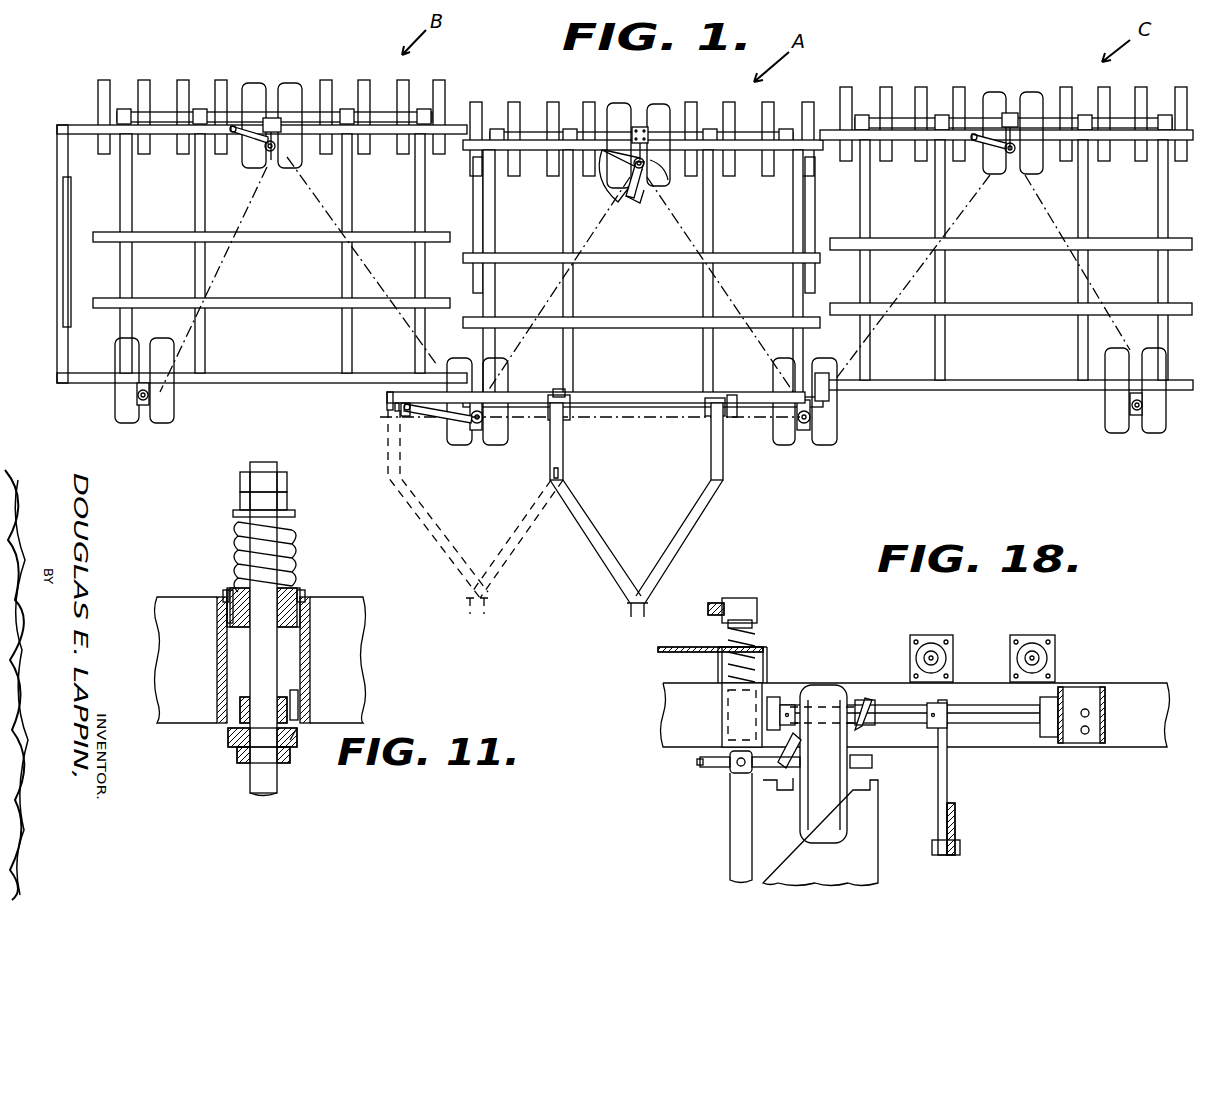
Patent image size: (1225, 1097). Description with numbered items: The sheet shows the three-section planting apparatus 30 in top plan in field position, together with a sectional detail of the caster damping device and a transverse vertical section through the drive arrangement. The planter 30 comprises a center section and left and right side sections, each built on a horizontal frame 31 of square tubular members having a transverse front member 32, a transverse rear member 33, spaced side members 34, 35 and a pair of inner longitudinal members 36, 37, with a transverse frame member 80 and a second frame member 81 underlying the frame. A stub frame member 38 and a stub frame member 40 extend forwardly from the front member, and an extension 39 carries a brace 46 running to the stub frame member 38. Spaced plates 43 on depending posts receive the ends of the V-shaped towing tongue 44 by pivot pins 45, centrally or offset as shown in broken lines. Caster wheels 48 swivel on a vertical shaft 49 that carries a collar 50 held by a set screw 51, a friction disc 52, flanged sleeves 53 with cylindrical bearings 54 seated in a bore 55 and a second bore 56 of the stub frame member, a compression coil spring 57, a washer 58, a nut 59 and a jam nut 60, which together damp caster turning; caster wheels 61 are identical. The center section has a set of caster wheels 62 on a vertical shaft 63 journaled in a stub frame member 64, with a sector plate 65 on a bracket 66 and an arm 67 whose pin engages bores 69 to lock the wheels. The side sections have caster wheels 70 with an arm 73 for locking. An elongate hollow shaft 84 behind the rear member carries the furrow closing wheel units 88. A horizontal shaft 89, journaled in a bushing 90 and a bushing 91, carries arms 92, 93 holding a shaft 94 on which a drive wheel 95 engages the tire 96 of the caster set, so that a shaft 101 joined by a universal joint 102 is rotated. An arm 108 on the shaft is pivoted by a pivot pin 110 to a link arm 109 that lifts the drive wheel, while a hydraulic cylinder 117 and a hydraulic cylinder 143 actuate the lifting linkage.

In FIG. 1, the three-section planting apparatus 30 is at (796, 480).
In FIG. 1, the frame 31 is at (288, 383).
In FIG. 11, the frame 31 is at (355, 622).
In FIG. 1, the transverse front member 32 is at (212, 383).
In FIG. 1, the transverse rear member 33 is at (378, 150).
In FIG. 18, the transverse rear member 33 is at (770, 683).
In FIG. 1, the side member 34 is at (132, 210).
In FIG. 1, the side member 35 is at (426, 205).
In FIG. 1, the longitudinal member 36 is at (205, 210).
In FIG. 1, the longitudinal member 37 is at (352, 210).
In FIG. 18, the longitudinal member 37 is at (1105, 695).
In FIG. 1, the stub frame member 38 is at (490, 398).
In FIG. 11, the stub frame member 38 is at (312, 605).
In FIG. 1, the extension 39 is at (410, 392).
In FIG. 1, the stub frame member 40 is at (838, 410).
In FIG. 1, the plates 43 is at (395, 410).
In FIG. 1, the towing tongue 44 is at (700, 517).
In FIG. 1, the pivot pins 45 is at (735, 415).
In FIG. 1, the brace 46 is at (435, 418).
In FIG. 1, the caster wheels 48 is at (465, 440).
In FIG. 11, the vertical shaft 49 is at (226, 660).
In FIG. 11, the collar 50 is at (230, 748).
In FIG. 11, the set screw 51 is at (238, 762).
In FIG. 11, the friction disc 52 is at (292, 748).
In FIG. 11, the flanged sleeve 53 is at (297, 615).
In FIG. 11, the cylindrical bearing 54 is at (235, 610).
In FIG. 11, the bore 55 is at (290, 700).
In FIG. 11, the second bore 56 is at (232, 612).
In FIG. 11, the compression coil spring 57 is at (292, 560).
In FIG. 11, the washer 58 is at (295, 514).
In FIG. 11, the nut 59 is at (240, 502).
In FIG. 11, the jam nut 60 is at (240, 480).
In FIG. 1, the caster wheels 61 is at (815, 440).
In FIG. 1, the set of caster wheels 62 is at (660, 100).
In FIG. 1, the vertical shaft 63 is at (662, 175).
In FIG. 18, the vertical shaft 63 is at (742, 598).
In FIG. 18, the stub frame member 64 is at (722, 722).
In FIG. 1, the sector plate 65 is at (630, 200).
In FIG. 18, the sector plate 65 is at (665, 647).
In FIG. 18, the bracket 66 is at (767, 660).
In FIG. 1, the arm 67 is at (641, 170).
In FIG. 18, the arm 67 is at (712, 603).
In FIG. 1, the bores 69 is at (605, 180).
In FIG. 1, the set of caster wheels 70 is at (298, 76).
In FIG. 1, the arm 73 is at (255, 148).
In FIG. 1, the transverse frame member 80 is at (263, 308).
In FIG. 1, the second frame member 81 is at (262, 242).
In FIG. 1, the elongate hollow shaft 84 is at (158, 112).
In FIG. 1, the furrow closing wheel units 88 is at (105, 80).
In FIG. 18, the horizontal shaft 89 is at (975, 723).
In FIG. 18, the bushing 90 is at (780, 700).
In FIG. 18, the bushing 91 is at (1050, 743).
In FIG. 18, the arm 92 is at (790, 750).
In FIG. 18, the arm 93 is at (865, 742).
In FIG. 18, the shaft 94 is at (872, 762).
In FIG. 18, the drive wheel 95 is at (826, 800).
In FIG. 18, the tire 96 is at (850, 860).
In FIG. 18, the shaft 101 is at (708, 767).
In FIG. 18, the universal joint 102 is at (736, 772).
In FIG. 18, the arm 108 is at (947, 786).
In FIG. 18, the link arm 109 is at (955, 825).
In FIG. 18, the pivot pin 110 is at (955, 850).
In FIG. 18, the hydraulic cylinder 117 is at (1050, 635).
In FIG. 18, the hydraulic cylinder 143 is at (945, 635).